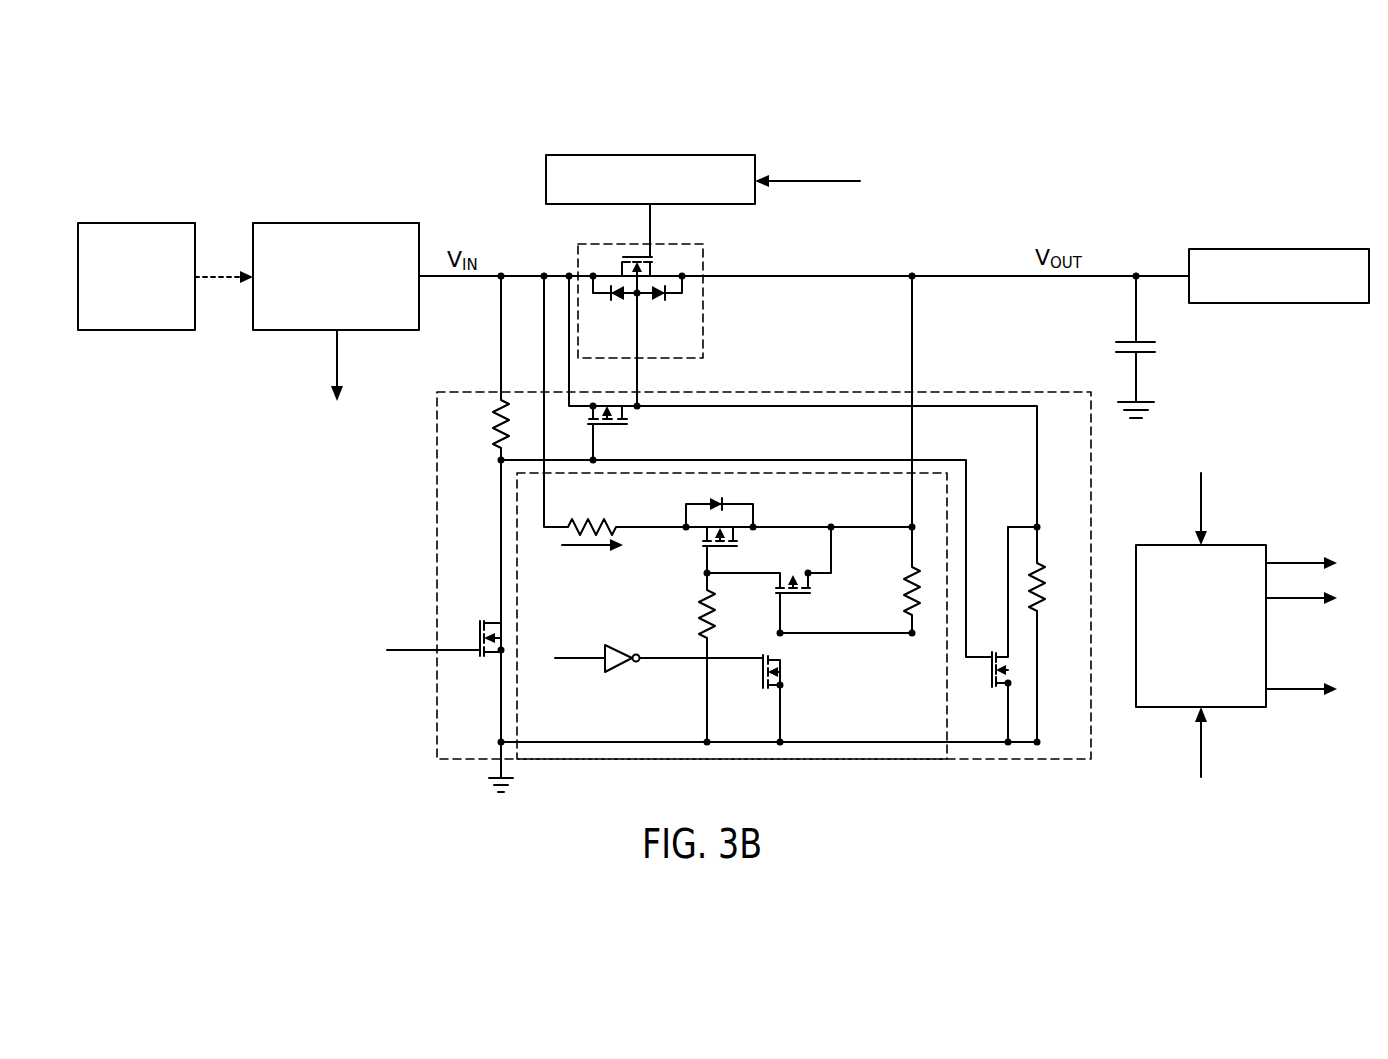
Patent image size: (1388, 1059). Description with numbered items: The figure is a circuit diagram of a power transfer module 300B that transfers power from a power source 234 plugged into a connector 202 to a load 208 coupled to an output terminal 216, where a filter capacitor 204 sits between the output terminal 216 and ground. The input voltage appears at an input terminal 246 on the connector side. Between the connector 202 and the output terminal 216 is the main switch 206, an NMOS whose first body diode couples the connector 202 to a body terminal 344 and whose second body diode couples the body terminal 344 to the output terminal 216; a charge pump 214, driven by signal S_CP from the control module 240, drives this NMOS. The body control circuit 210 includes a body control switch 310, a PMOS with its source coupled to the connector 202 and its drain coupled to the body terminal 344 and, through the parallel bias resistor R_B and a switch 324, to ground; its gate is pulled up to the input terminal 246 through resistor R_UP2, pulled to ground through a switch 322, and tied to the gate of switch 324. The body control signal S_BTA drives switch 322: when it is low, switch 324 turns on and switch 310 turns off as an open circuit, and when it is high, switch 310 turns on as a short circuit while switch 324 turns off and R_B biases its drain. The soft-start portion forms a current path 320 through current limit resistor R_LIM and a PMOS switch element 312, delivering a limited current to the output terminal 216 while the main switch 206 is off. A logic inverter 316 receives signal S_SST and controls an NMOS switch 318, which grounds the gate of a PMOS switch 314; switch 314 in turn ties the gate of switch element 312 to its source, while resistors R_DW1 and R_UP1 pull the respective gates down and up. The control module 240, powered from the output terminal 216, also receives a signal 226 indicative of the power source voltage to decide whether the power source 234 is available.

The power transfer module 300B is at (254, 151).
The power source 234 is at (142, 222).
The connector 202 is at (308, 222).
The signal 226 is at (337, 353).
The charge pump 214 is at (612, 154).
The main switch 206 is at (671, 281).
The body terminal 344 is at (640, 304).
The input terminal 246 is at (500, 279).
The output terminal 216 is at (1139, 275).
The load 208 is at (1289, 248).
The filter capacitor 204 is at (1140, 340).
The body control circuit 210 is at (780, 391).
The body control switch 310 is at (615, 427).
The current path 320 is at (836, 527).
The switch element 312 is at (737, 548).
The switch 314 is at (800, 596).
The logic inverter 316 is at (617, 669).
The switch 318 is at (760, 681).
The switch 322 is at (481, 631).
The switch 324 is at (985, 690).
The control module 240 is at (1190, 544).